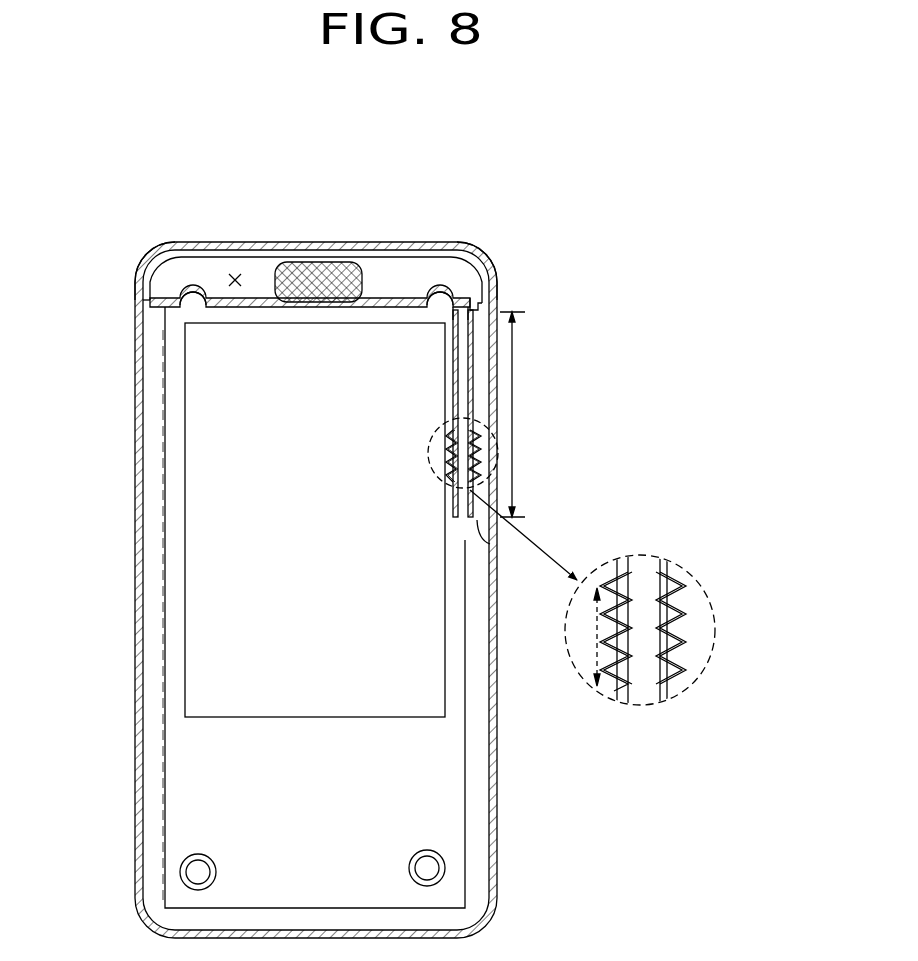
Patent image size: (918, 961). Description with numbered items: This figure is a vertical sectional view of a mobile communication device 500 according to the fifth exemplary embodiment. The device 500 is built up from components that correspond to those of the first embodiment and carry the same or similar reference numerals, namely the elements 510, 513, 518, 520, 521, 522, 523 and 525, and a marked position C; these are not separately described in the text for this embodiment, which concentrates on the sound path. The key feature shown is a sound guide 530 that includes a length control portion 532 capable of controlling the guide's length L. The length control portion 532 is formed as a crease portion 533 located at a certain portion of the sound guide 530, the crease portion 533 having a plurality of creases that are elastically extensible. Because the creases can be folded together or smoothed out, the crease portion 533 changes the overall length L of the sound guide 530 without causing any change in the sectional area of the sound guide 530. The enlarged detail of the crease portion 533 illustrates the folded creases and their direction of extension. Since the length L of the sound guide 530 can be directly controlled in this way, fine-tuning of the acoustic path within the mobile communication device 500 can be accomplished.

The mobile terminal 500 is at (540, 212).
The case 510 is at (492, 678).
The display unit 513 is at (190, 648).
The inner surface of case 518 is at (460, 762).
The frame 520 is at (304, 236).
The speaker hole 521 is at (350, 258).
The left side wall 522 is at (140, 290).
The hook protrusion 523 is at (440, 290).
The right side wall 525 is at (497, 283).
The sound guide 530 is at (597, 509).
The length control portion 532 is at (700, 670).
The crease portion 533 is at (678, 606).
The center C is at (235, 274).
The length L is at (514, 414).